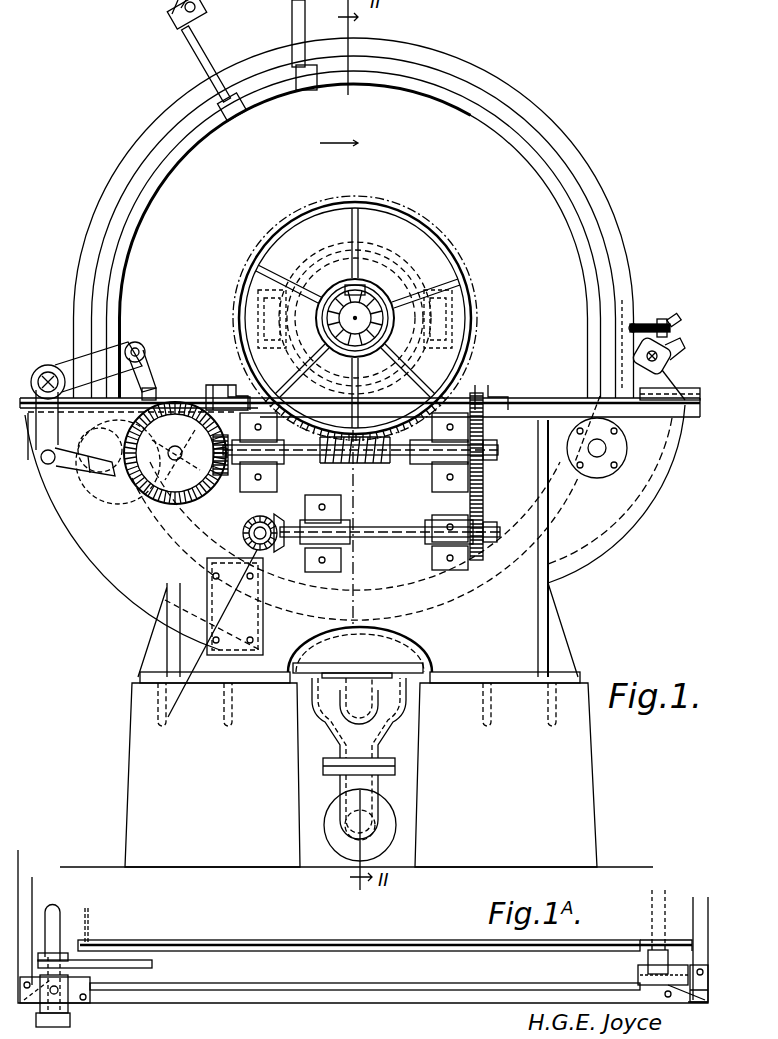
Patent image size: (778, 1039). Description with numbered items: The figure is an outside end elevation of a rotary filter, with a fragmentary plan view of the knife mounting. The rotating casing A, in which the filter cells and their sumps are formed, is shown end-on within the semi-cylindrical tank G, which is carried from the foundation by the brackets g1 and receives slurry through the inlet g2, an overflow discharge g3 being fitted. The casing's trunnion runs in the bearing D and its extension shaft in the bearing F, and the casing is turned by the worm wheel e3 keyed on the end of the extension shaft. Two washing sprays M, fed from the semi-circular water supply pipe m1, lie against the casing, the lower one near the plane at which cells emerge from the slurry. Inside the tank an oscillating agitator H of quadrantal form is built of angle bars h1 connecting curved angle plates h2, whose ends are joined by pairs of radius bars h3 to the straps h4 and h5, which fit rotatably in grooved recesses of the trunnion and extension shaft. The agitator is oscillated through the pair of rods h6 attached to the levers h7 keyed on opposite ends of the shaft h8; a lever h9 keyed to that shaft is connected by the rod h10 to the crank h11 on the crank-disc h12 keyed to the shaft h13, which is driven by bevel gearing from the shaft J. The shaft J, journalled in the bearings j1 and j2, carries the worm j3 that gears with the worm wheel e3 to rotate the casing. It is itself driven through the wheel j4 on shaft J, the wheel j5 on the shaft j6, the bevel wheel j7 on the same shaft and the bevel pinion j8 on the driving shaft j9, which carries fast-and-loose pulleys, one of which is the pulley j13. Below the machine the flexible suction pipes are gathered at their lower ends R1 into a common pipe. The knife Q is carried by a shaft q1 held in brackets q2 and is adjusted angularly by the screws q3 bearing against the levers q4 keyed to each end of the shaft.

In FIG. 1, the rotating casing A is at (466, 84).
In FIG. 1, the washing spray M is at (292, 18).
In FIG. 1, the semi-circular water supply pipe m1 is at (356, 118).
In FIG. 1, the bearing D is at (395, 222).
In FIG. 1, the bearing F is at (390, 295).
In FIG. 1, the worm wheel e3 is at (470, 330).
In FIG. 1, the strap h4 is at (450, 302).
In FIG. 1, the strap h5 is at (262, 300).
In FIG. 1, the oscillating agitator H is at (366, 555).
In FIG. 1, the semi-cylindrical tank G is at (606, 535).
In FIG. 1, the bracket g1 is at (160, 660).
In FIG. 1, the inlet g2 is at (598, 456).
In FIG. 1, the overflow discharge g3 is at (140, 350).
In FIG. 1, the angle bar h1 is at (530, 610).
In FIG. 1, the curved angle plate h2 is at (430, 672).
In FIG. 1, the radius bar h3 is at (552, 512).
In FIG. 1, the rod h6 is at (152, 392).
In FIG. 1, the lever h7 is at (90, 356).
In FIG. 1A, the lever h7 is at (120, 962).
In FIG. 1, the shaft h8 is at (44, 375).
In FIG. 1A, the shaft h8 is at (55, 932).
In FIG. 1, the lever h9 is at (66, 462).
In FIG. 1, the rod h10 is at (132, 480).
In FIG. 1, the crank h11 is at (140, 500).
In FIG. 1, the crank-disc h12 is at (220, 433).
In FIG. 1, the shaft h13 is at (220, 384).
In FIG. 1, the shaft J is at (318, 455).
In FIG. 1, the bearing j1 is at (322, 574).
In FIG. 1, the bearing j2 is at (440, 488).
In FIG. 1, the worm j3 is at (372, 460).
In FIG. 1, the wheel j4 is at (486, 410).
In FIG. 1, the wheel j5 is at (492, 544).
In FIG. 1, the shaft j6 is at (394, 536).
In FIG. 1, the bevel wheel j7 is at (264, 600).
In FIG. 1, the bevel pinion j8 is at (252, 528).
In FIG. 1, the driving shaft j9 is at (200, 660).
In FIG. 1, the fast-and-loose pulley j13 is at (460, 574).
In FIG. 1, the lower ends of suction pipes R1 is at (340, 692).
In FIG. 1, the knife Q is at (640, 312).
In FIG. 1A, the knife Q is at (650, 912).
In FIG. 1, the shaft q1 is at (638, 358).
In FIG. 1A, the shaft q1 is at (648, 940).
In FIG. 1, the bracket q2 is at (663, 386).
In FIG. 1A, the bracket q2 is at (650, 985).
In FIG. 1, the screw q3 is at (630, 326).
In FIG. 1A, the screw q3 is at (668, 962).
In FIG. 1, the lever q4 is at (640, 340).
In FIG. 1A, the lever q4 is at (655, 962).